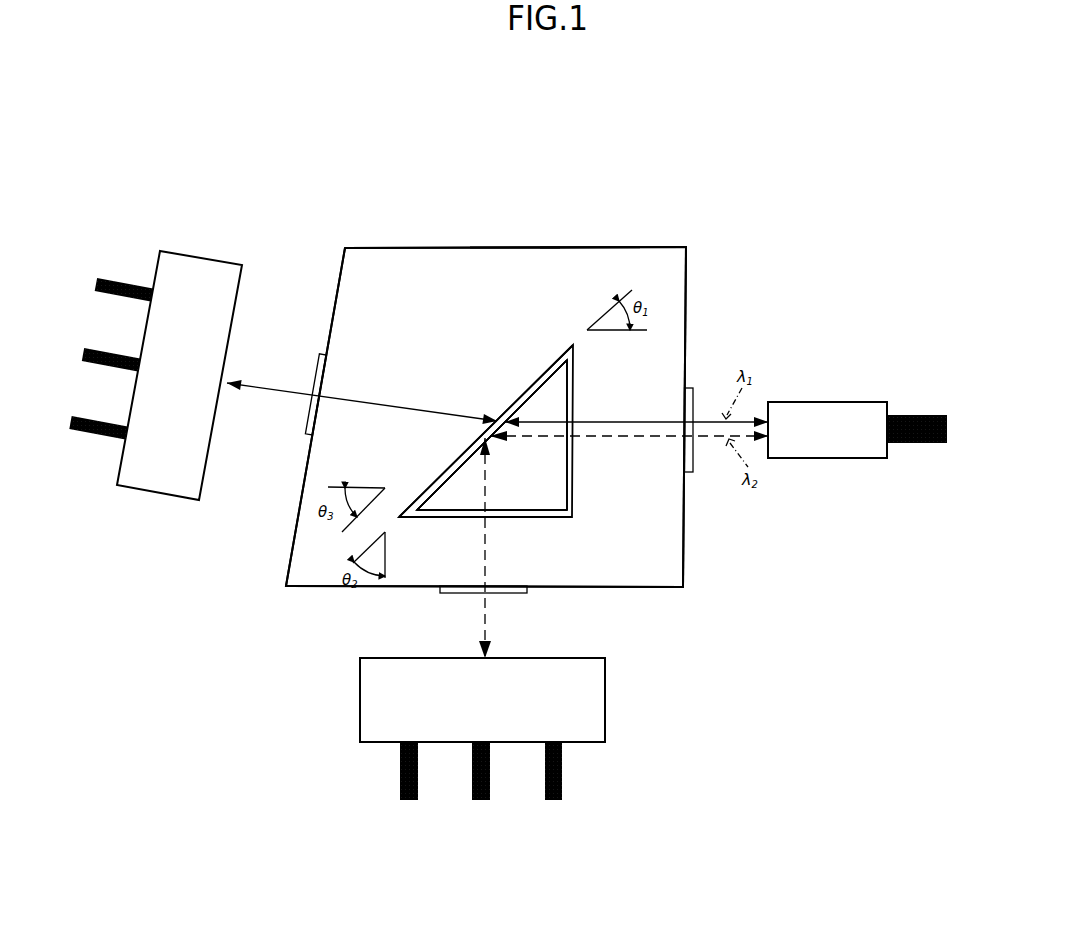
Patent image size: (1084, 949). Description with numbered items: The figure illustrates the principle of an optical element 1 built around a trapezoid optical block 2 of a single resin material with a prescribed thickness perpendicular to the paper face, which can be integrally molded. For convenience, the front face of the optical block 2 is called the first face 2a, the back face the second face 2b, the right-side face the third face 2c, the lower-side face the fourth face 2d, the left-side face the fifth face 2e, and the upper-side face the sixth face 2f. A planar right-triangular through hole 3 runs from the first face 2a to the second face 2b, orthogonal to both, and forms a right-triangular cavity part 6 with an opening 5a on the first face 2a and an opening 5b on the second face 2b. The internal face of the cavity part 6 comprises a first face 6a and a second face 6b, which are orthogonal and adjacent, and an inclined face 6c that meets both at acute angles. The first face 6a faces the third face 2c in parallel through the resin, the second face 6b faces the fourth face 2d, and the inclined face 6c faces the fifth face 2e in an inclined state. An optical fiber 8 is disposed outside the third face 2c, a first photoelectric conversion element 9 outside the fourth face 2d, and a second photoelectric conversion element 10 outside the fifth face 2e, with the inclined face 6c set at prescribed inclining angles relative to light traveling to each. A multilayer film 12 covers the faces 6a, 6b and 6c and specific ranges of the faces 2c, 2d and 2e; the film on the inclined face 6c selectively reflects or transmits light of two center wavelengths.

The optical element 1 is at (296, 206).
The optical block 2 is at (385, 248).
The first face 2a is at (505, 273).
The second face 2b is at (573, 267).
The third face 2c is at (688, 358).
The fourth face 2d is at (557, 587).
The fifth face 2e is at (330, 335).
The sixth face 2f is at (455, 248).
The through hole 3 is at (537, 380).
The opening 5a is at (448, 467).
The opening 5b is at (427, 490).
The cavity part 6 is at (534, 455).
The first face 6a is at (566, 483).
The second face 6b is at (533, 513).
The inclined face 6c is at (510, 410).
The optical fiber 8 is at (828, 400).
The first photoelectric conversion element 9 is at (605, 690).
The second photoelectric conversion element 10 is at (155, 493).
The multilayer film 12 is at (308, 412).